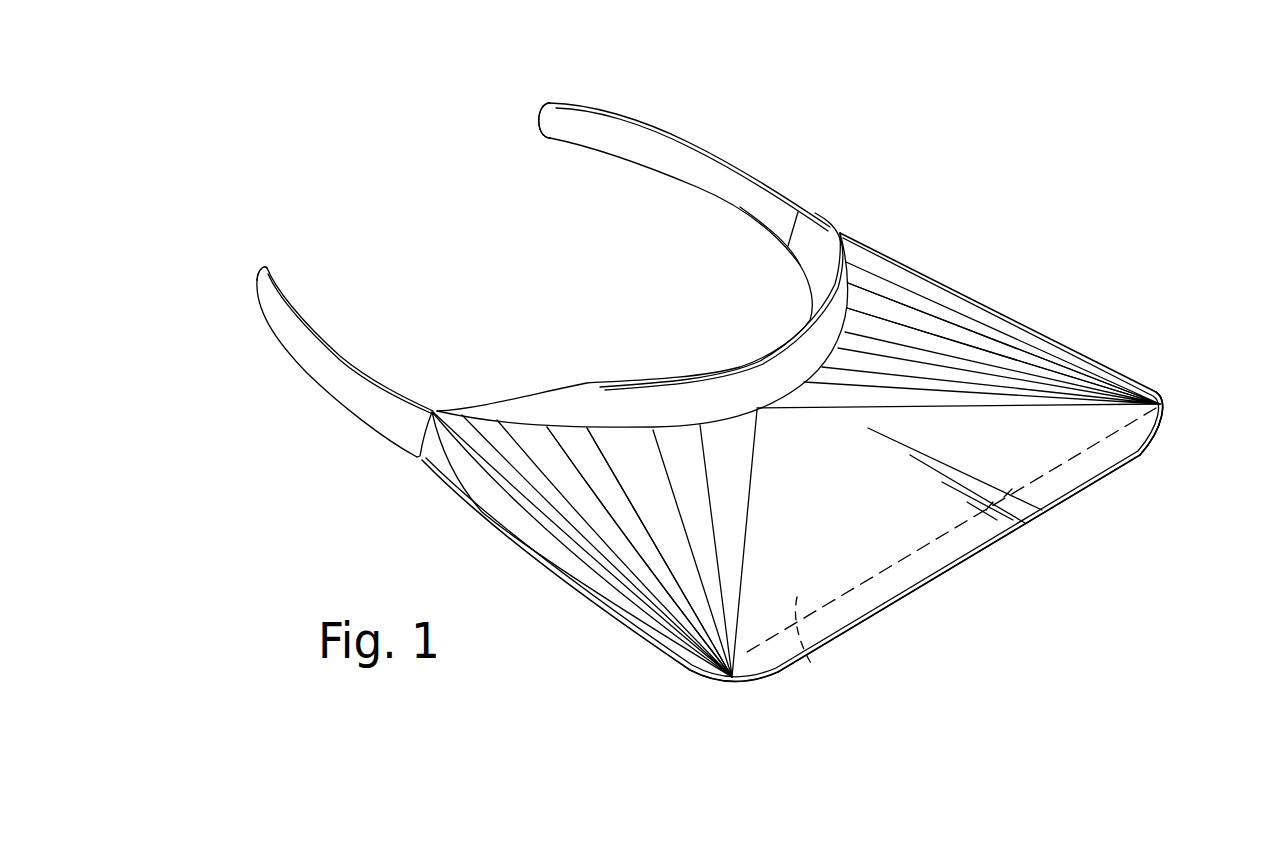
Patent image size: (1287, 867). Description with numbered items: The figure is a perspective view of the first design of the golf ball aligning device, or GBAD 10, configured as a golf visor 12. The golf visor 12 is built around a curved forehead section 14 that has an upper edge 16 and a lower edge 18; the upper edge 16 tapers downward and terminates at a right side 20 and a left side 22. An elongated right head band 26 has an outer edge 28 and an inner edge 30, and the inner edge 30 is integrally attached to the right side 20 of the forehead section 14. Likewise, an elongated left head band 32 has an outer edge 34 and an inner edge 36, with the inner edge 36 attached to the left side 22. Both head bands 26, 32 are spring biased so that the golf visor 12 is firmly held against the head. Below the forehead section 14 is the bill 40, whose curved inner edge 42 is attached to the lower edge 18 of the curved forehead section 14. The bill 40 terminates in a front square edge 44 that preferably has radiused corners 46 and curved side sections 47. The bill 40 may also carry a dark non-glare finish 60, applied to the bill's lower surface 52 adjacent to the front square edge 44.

The GBAD 10 is at (982, 72).
The golf visor 12 is at (832, 297).
The curved forehead section 14 is at (955, 366).
The upper edge 16 is at (813, 213).
The lower edge 18 is at (597, 423).
The right side 20 is at (560, 405).
The left side 22 is at (827, 230).
The elongated right head band 26 is at (330, 375).
The outer edge 28 is at (256, 281).
The inner edge 30 is at (420, 460).
The elongated left head band 32 is at (615, 135).
The outer edge 34 is at (536, 115).
The inner edge 36 is at (787, 247).
The bill 40 is at (968, 353).
The curved inner edge 42 is at (840, 343).
The front square edge 44 is at (960, 563).
The radiused corners 46 is at (713, 682).
The curved side sections 47 is at (585, 582).
The lower surface 52 is at (810, 658).
The dark non-glare finish 60 is at (1118, 443).